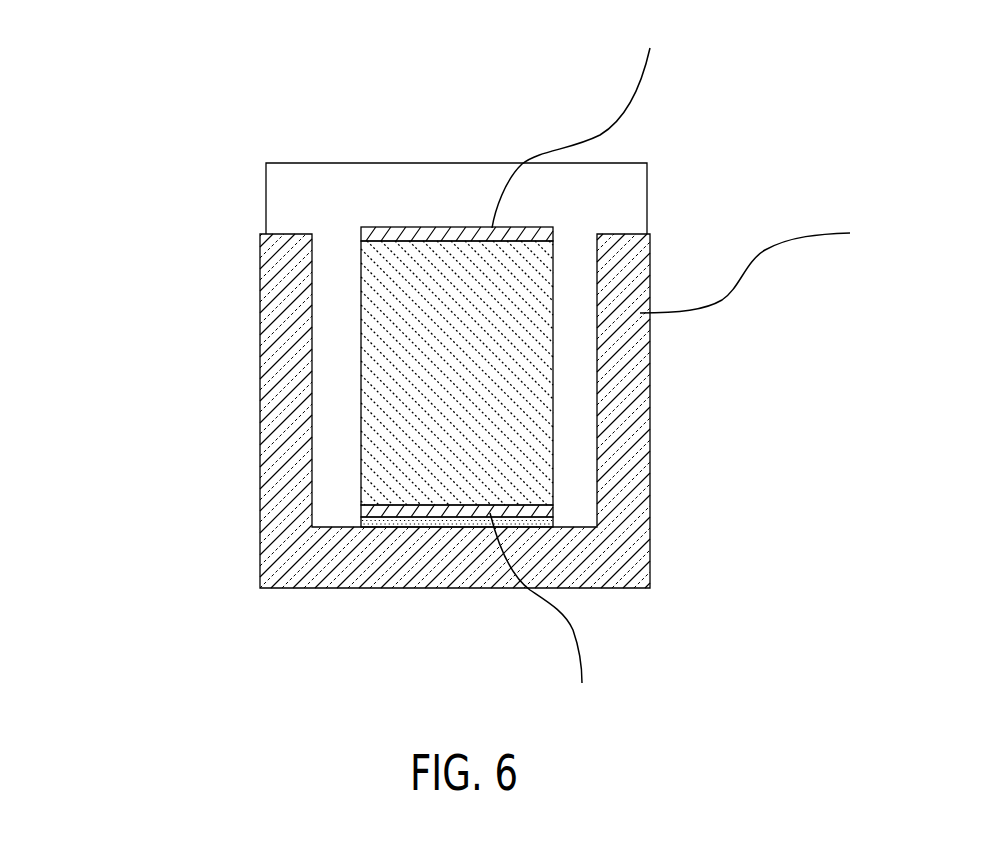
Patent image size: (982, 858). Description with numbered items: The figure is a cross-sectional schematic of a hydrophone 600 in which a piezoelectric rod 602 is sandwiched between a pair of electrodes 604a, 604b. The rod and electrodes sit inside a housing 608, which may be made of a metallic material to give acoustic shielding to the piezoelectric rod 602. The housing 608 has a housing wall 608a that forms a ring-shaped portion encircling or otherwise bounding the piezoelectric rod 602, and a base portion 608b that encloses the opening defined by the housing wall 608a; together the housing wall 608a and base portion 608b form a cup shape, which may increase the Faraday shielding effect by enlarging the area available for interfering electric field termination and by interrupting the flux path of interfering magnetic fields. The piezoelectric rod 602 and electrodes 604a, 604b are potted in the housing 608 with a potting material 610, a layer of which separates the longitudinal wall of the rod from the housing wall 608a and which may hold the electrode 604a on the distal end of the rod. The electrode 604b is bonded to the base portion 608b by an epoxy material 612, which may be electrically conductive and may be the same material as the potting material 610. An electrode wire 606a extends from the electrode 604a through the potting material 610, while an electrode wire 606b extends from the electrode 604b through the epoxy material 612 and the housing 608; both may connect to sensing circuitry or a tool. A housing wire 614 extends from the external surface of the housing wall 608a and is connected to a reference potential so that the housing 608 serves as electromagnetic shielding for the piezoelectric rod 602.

The hydrophone 600 is at (135, 89).
The piezoelectric rod 602 is at (545, 362).
The electrode 604a is at (432, 227).
The electrode 604b is at (553, 511).
The electrode wire 606a is at (605, 130).
The electrode wire 606b is at (541, 595).
The housing 608 is at (262, 302).
The housing wall 608a is at (277, 395).
The base portion 608b is at (420, 572).
The potting material 610 is at (293, 163).
The epoxy material 612 is at (428, 518).
The housing wire 614 is at (782, 248).